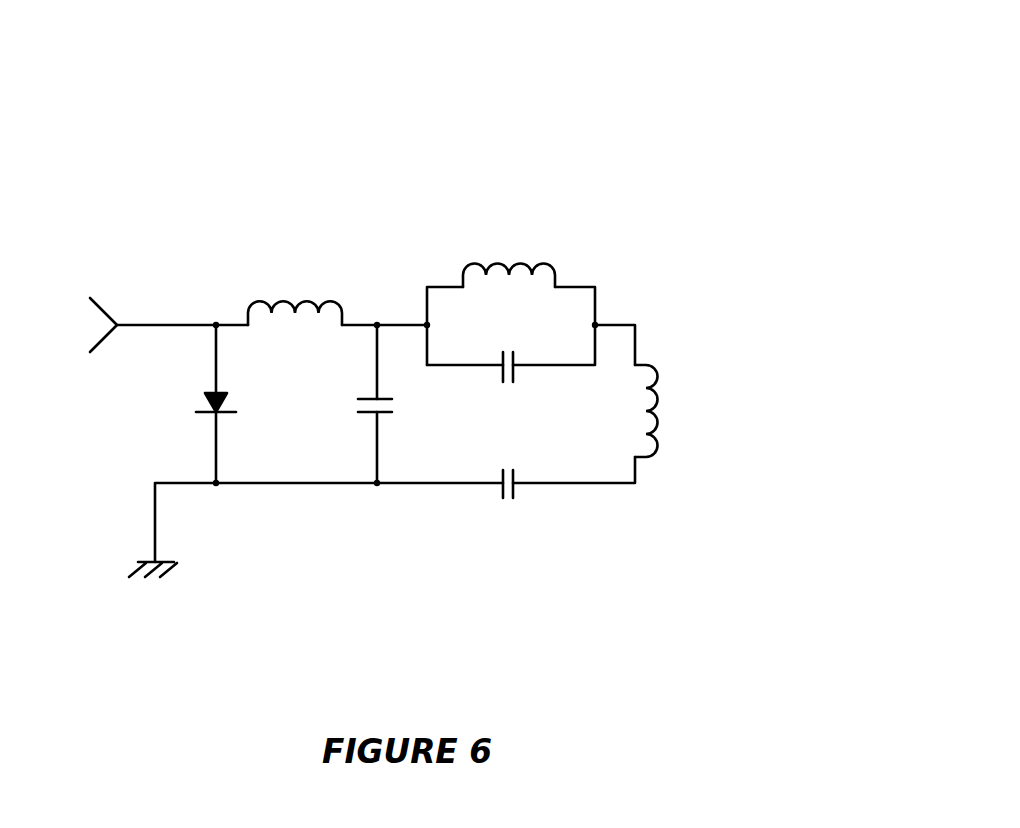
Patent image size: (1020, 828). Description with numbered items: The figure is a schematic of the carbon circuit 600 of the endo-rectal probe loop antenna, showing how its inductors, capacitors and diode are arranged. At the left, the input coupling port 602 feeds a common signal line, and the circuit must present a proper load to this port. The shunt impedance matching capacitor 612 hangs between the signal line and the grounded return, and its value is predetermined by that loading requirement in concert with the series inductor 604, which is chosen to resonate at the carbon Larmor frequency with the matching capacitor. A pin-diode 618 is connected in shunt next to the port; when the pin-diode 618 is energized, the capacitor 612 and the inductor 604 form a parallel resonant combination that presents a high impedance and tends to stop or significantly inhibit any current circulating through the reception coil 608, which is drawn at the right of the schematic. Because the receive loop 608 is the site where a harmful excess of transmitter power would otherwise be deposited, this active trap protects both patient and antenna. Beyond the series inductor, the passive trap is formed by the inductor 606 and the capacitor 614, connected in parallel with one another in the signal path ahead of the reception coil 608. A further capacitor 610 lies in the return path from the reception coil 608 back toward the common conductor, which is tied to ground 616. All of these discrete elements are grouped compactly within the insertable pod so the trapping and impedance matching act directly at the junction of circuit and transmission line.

The carbon circuit 600 is at (737, 122).
The input coupling port 602 is at (108, 308).
The series inductor 604 is at (342, 310).
The passive trap inductor 606 is at (556, 276).
The reception coil 608 is at (658, 380).
The capacitor 610 is at (515, 494).
The shunt impedance matching capacitor 612 is at (383, 414).
The passive trap capacitor 614 is at (515, 374).
The ground 616 is at (130, 571).
The pin-diode 618 is at (210, 402).